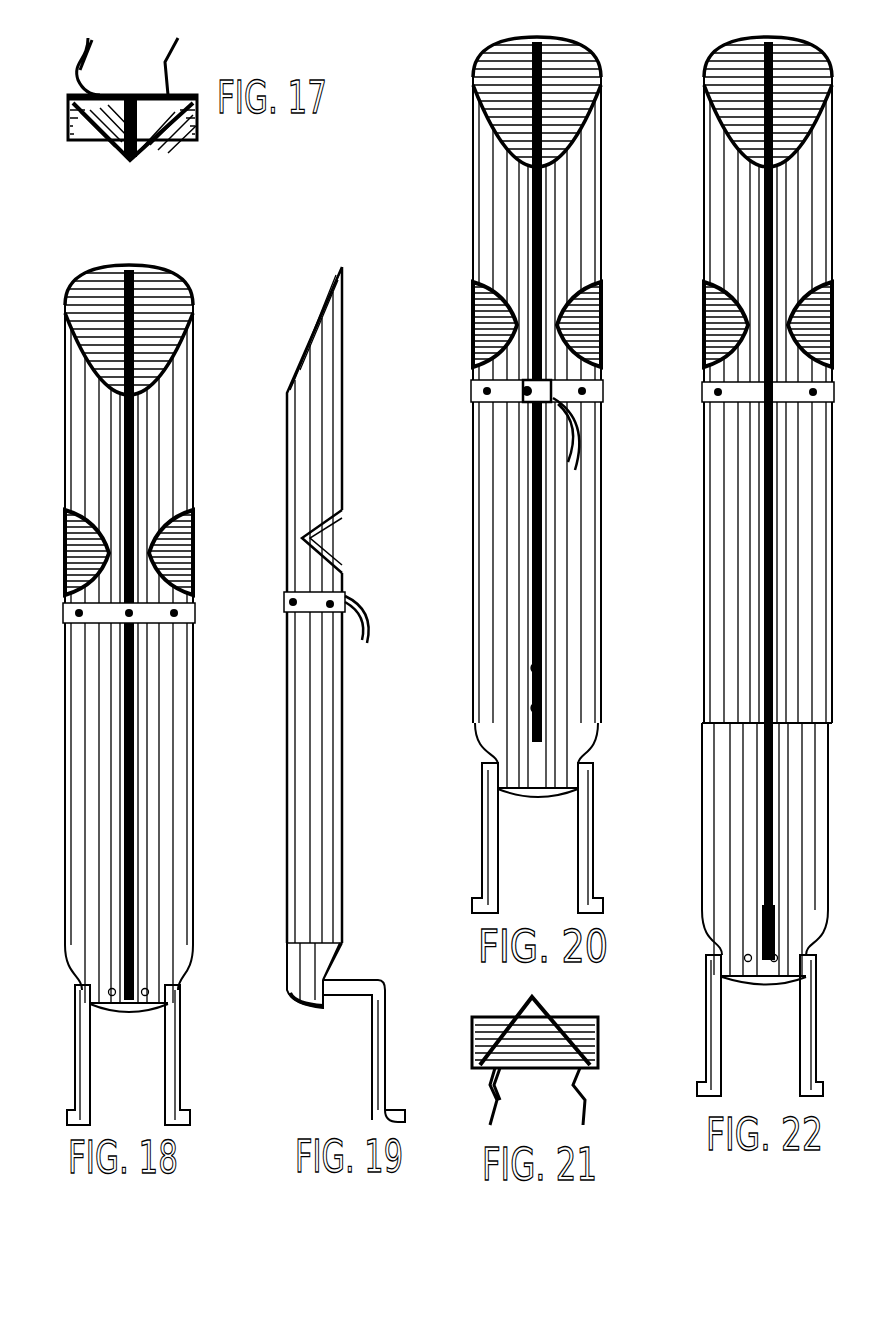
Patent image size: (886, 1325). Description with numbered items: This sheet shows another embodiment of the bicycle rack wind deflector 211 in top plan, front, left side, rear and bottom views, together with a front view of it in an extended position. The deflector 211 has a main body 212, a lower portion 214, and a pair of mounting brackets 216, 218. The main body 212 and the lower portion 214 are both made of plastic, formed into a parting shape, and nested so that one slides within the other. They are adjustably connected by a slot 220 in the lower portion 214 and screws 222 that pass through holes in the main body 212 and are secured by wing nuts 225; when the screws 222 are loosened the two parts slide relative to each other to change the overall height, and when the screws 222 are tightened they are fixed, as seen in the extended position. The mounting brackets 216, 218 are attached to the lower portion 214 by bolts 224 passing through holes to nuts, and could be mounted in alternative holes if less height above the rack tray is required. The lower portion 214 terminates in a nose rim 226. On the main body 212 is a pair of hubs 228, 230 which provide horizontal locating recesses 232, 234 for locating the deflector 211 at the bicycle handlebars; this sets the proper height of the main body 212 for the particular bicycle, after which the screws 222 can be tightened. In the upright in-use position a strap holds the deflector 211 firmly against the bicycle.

In FIG. 18, the deflector 211 is at (140, 695).
In FIG. 19, the deflector 211 is at (363, 680).
In FIG. 20, the deflector 211 is at (529, 475).
In FIG. 17, the main body 212 is at (143, 152).
In FIG. 18, the main body 212 is at (195, 425).
In FIG. 19, the main body 212 is at (343, 373).
In FIG. 20, the main body 212 is at (602, 212).
In FIG. 22, the main body 212 is at (833, 210).
In FIG. 18, the lower portion 214 is at (190, 948).
In FIG. 19, the lower portion 214 is at (342, 952).
In FIG. 20, the lower portion 214 is at (605, 590).
In FIG. 21, the lower portion 214 is at (583, 1070).
In FIG. 22, the lower portion 214 is at (702, 778).
In FIG. 17, the mounting bracket 216 is at (190, 42).
In FIG. 18, the mounting bracket 216 is at (183, 1083).
In FIG. 19, the mounting bracket 216 is at (390, 1065).
In FIG. 22, the mounting bracket 216 is at (816, 1007).
In FIG. 17, the mounting bracket 218 is at (78, 42).
In FIG. 18, the mounting bracket 218 is at (95, 1077).
In FIG. 22, the mounting bracket 218 is at (705, 1011).
In FIG. 22, the slot 220 is at (760, 836).
In FIG. 18, the screws 222 is at (135, 876).
In FIG. 18, the bolts 224 is at (172, 1003).
In FIG. 22, the bolts 224 is at (745, 955).
In FIG. 20, the wing nuts 225 is at (545, 668).
In FIG. 18, the nose rim 226 is at (150, 1012).
In FIG. 19, the nose rim 226 is at (325, 1005).
In FIG. 20, the nose rim 226 is at (552, 797).
In FIG. 22, the nose rim 226 is at (775, 981).
In FIG. 17, the hub 228 is at (92, 143).
In FIG. 18, the hub 228 is at (65, 523).
In FIG. 20, the hub 228 is at (604, 320).
In FIG. 22, the hub 228 is at (705, 318).
In FIG. 17, the hub 230 is at (195, 143).
In FIG. 18, the hub 230 is at (195, 525).
In FIG. 20, the hub 230 is at (473, 315).
In FIG. 22, the hub 230 is at (833, 315).
In FIG. 19, the horizontal locating recess 232 is at (318, 535).
In FIG. 19, the horizontal locating recess 234 is at (352, 541).